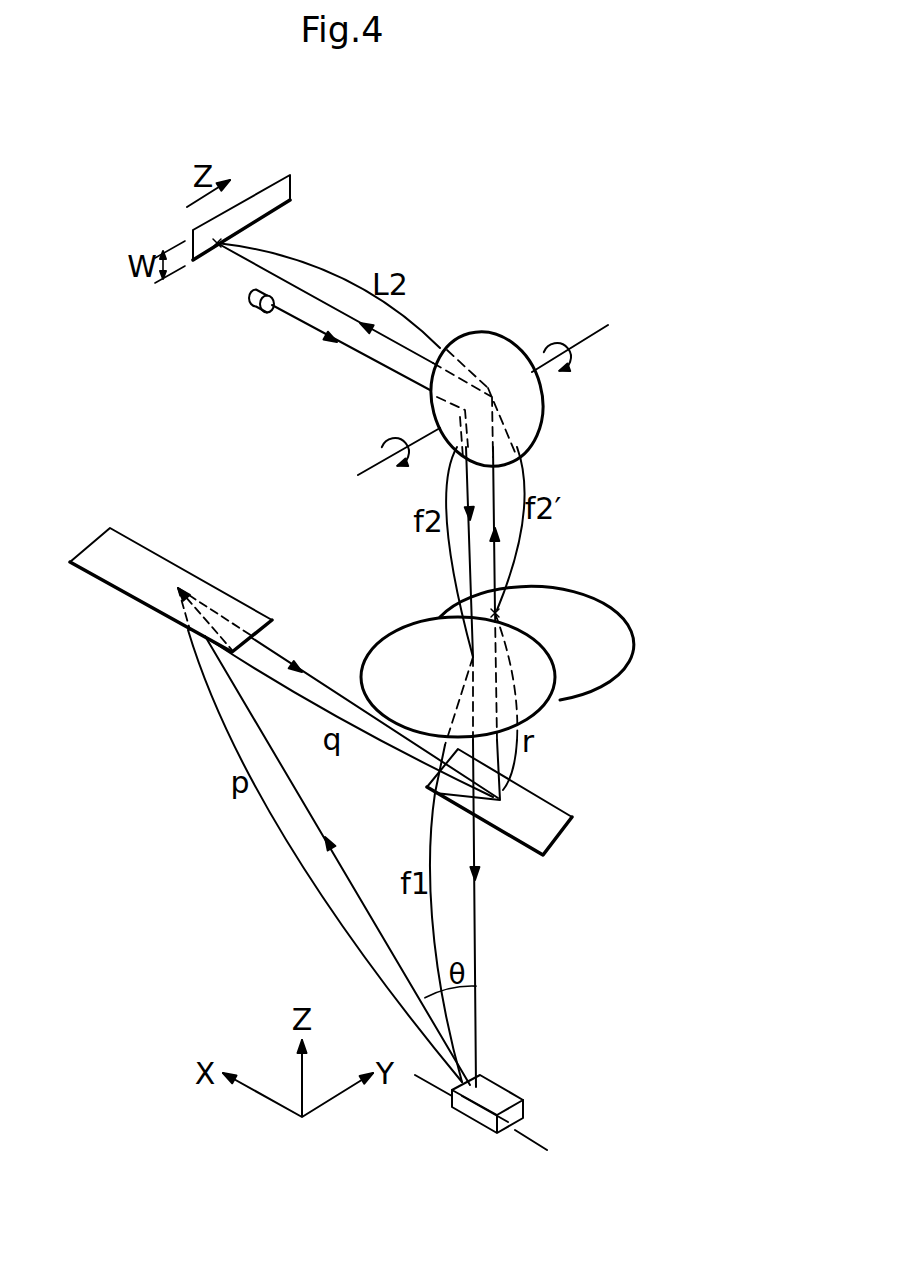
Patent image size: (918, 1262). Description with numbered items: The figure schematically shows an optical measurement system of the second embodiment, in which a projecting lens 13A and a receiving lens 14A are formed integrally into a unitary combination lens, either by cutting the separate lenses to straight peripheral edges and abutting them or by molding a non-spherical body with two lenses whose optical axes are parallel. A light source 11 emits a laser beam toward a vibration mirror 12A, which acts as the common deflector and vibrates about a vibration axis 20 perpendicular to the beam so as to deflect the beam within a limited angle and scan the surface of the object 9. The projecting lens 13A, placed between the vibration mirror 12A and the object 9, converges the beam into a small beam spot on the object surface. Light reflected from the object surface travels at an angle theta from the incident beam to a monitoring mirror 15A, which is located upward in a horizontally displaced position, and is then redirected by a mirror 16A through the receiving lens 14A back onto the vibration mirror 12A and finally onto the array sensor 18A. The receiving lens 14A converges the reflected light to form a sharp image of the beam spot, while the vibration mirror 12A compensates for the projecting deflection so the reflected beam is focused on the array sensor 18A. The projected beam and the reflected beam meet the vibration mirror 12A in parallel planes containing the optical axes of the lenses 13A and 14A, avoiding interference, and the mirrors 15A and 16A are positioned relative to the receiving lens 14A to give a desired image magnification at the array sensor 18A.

The array sensor 18A is at (265, 188).
The light source 11 is at (250, 308).
The vibration mirror 12A is at (543, 398).
The vibration axis 20 is at (598, 335).
The projecting lens 13A is at (543, 712).
The receiving lens 14A is at (632, 615).
The mirror 16A is at (553, 842).
The monitoring mirror 15A is at (125, 535).
The object 9 is at (527, 1100).